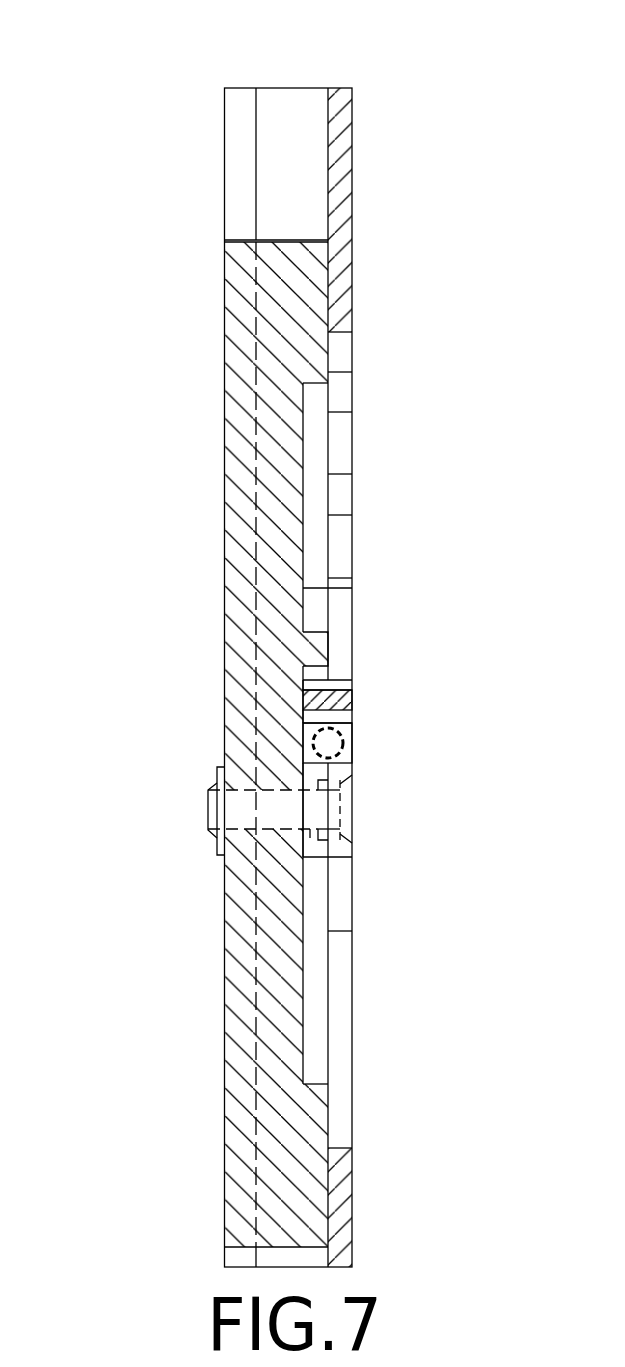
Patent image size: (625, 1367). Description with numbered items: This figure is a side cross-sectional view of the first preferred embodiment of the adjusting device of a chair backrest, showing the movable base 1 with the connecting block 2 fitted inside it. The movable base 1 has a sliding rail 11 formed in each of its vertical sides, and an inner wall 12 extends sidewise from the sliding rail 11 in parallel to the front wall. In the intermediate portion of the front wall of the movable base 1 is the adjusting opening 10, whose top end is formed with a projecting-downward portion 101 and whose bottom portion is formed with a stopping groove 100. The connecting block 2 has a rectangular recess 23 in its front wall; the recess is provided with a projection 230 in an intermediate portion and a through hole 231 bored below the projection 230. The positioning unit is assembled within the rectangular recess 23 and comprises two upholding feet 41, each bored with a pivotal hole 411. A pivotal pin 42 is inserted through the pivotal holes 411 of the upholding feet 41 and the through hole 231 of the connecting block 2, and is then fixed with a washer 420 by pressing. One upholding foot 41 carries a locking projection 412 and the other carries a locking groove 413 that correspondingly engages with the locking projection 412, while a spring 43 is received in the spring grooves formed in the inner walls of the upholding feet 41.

The movable base 1 is at (338, 143).
The sliding rail 11 is at (294, 110).
The inner wall 12 is at (244, 140).
The connecting block 2 is at (285, 318).
The projecting-downward portion 101 is at (347, 330).
The adjusting opening 10 is at (338, 350).
The rectangular recess 23 is at (305, 508).
The upholding foot 41 is at (330, 600).
The projection 230 is at (330, 650).
The locking groove 413 is at (340, 685).
The locking projection 412 is at (345, 703).
The spring 43 is at (345, 740).
The pivotal pin 42 is at (340, 808).
The pivotal hole 411 is at (345, 840).
The washer 420 is at (217, 773).
The through hole 231 is at (275, 832).
The stopping groove 100 is at (340, 1049).